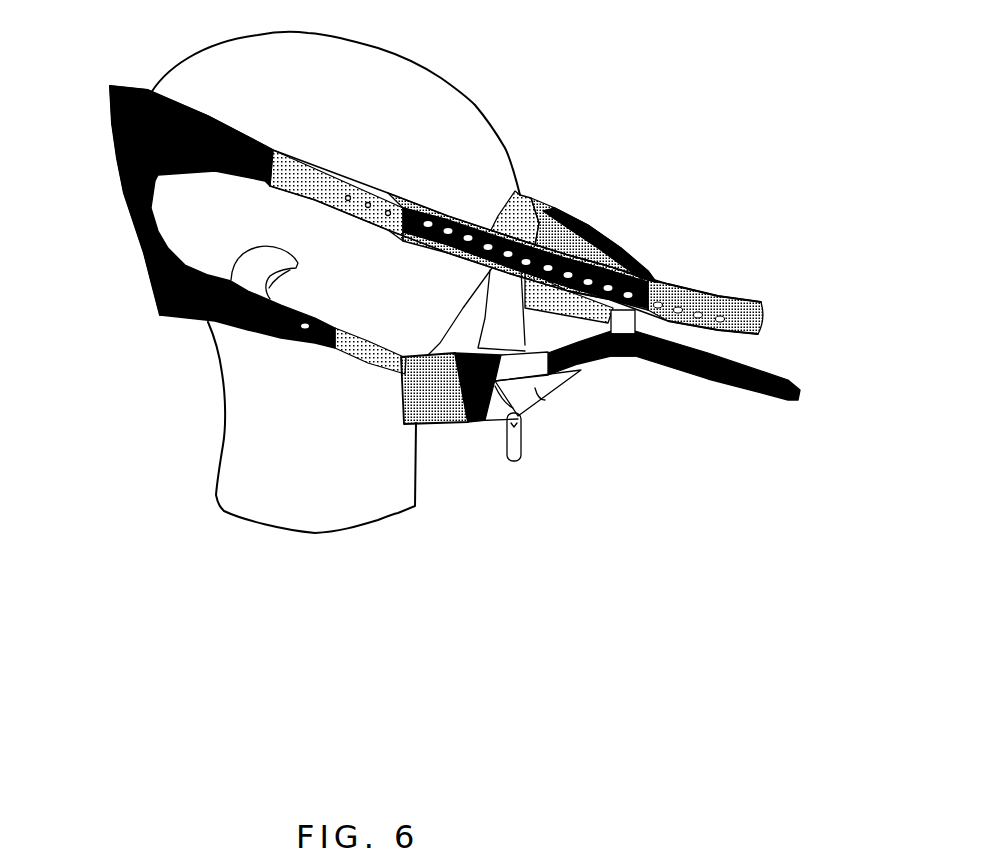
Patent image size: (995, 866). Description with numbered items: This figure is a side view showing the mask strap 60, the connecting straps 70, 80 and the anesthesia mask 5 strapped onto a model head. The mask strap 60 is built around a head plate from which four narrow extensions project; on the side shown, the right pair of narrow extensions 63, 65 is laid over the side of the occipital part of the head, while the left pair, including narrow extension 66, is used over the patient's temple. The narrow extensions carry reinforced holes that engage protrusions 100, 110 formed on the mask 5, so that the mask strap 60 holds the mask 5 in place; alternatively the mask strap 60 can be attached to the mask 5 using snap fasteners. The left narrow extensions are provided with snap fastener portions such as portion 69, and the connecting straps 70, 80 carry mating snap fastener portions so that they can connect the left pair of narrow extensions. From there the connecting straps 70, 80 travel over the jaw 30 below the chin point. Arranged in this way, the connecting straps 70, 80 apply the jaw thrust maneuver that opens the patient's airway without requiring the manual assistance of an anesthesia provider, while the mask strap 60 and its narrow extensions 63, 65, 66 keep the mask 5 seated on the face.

The mask 5 is at (527, 192).
The jaw 30 is at (490, 420).
The mask strap 60 is at (170, 310).
The narrow extension 63 is at (600, 240).
The narrow extension 65 is at (730, 296).
The narrow extension 66 is at (798, 383).
The snap fastener portion 69 is at (368, 347).
The connecting strap 70 is at (460, 420).
The connecting strap 80 is at (417, 417).
The protrusion 100 is at (637, 277).
The protrusion 110 is at (603, 353).